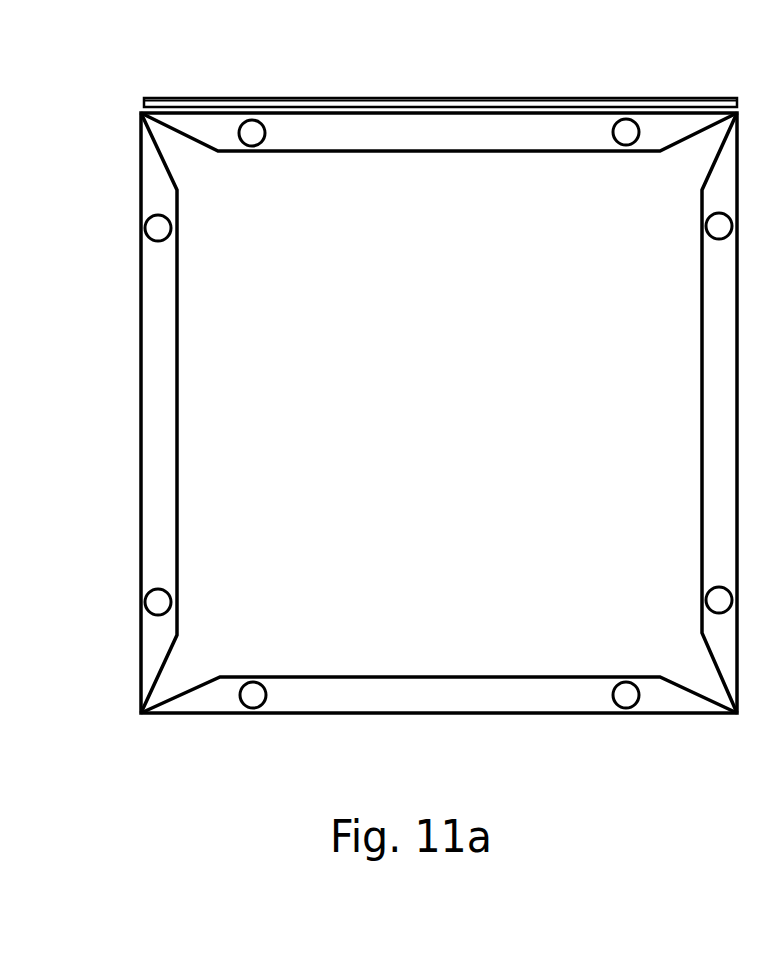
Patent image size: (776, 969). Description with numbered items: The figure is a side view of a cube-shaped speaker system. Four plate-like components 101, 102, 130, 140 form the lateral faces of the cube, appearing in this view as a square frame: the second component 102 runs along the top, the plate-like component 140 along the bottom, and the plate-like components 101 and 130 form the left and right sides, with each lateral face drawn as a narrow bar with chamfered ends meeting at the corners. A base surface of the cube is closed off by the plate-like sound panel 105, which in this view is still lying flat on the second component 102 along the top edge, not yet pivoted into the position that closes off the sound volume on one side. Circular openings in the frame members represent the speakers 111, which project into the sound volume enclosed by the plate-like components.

The sound panel 105 is at (460, 102).
The second component 102 is at (361, 133).
The speaker 111 is at (157, 224).
The plate-like component 101 is at (159, 296).
The plate-like component 130 is at (719, 507).
The plate-like component 140 is at (445, 695).